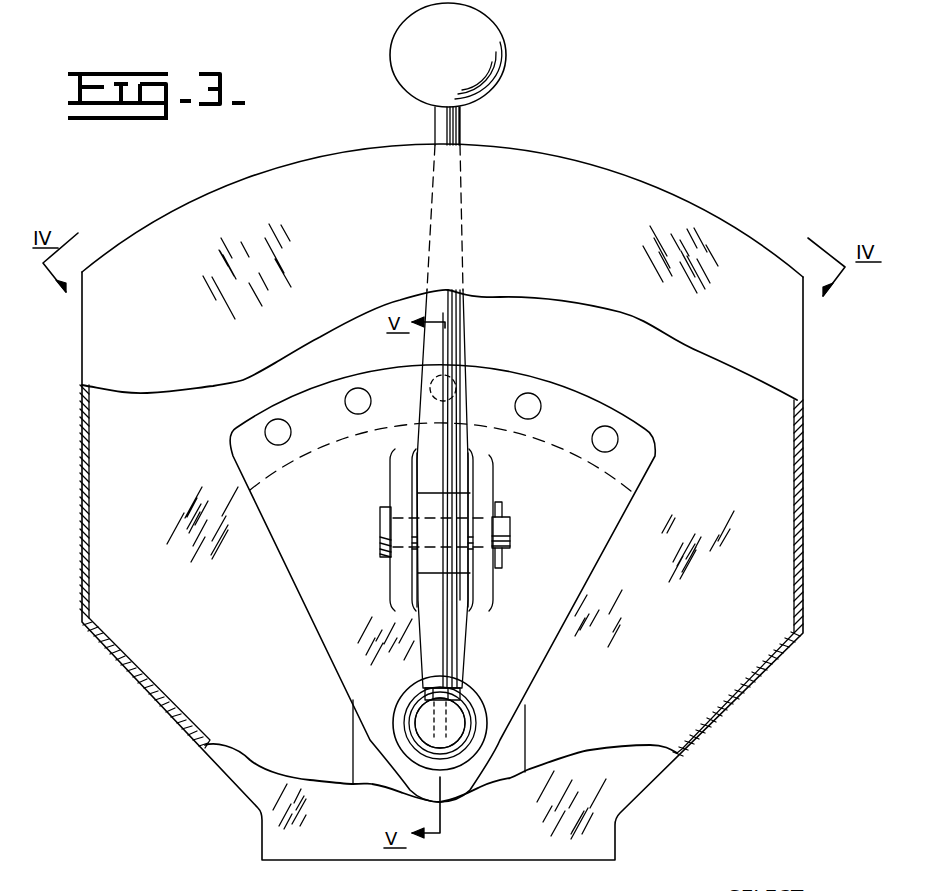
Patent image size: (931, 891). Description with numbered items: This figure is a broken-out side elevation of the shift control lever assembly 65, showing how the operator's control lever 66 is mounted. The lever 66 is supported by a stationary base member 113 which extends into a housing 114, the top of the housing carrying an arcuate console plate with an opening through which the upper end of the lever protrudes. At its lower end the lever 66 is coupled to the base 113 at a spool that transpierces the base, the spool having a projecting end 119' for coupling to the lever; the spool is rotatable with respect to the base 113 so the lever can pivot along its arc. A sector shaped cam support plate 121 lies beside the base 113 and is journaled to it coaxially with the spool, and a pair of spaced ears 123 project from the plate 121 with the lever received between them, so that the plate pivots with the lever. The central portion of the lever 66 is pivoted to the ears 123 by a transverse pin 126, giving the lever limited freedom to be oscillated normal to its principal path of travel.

The shift control lever assembly 65 is at (518, 132).
The control lever 66 is at (440, 119).
The housing 114 is at (612, 174).
The sector shaped cam support plate 121 is at (318, 603).
The ears 123 is at (396, 479).
The transverse pin 126 is at (522, 510).
The spool projection 119' is at (475, 707).
The stationary base member 113 is at (525, 740).